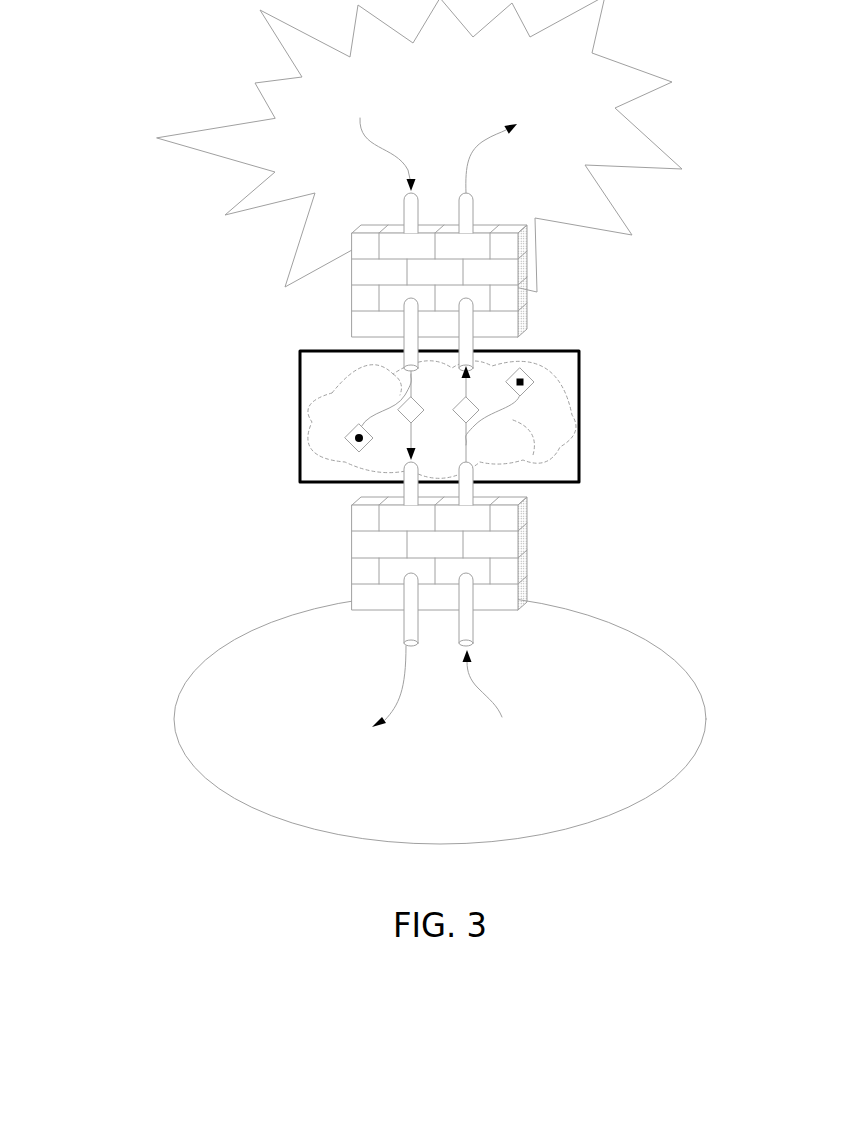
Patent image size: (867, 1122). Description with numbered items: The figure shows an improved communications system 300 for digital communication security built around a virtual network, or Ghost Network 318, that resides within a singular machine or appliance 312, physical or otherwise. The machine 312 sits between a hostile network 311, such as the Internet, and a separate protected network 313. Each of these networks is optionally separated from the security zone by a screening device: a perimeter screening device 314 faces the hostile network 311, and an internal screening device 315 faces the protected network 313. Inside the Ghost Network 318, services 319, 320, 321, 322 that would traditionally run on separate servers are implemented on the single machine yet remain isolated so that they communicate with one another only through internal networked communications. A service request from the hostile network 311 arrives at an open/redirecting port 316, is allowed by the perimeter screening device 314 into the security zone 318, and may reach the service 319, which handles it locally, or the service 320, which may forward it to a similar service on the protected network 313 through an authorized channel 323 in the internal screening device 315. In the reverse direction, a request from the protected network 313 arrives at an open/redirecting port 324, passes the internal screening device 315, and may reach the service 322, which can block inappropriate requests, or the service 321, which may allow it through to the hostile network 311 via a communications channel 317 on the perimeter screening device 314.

The communications system 300 is at (112, 53).
The hostile network 311 is at (683, 169).
The singular machine or appliance 312 is at (580, 414).
The protected network 313 is at (705, 714).
The perimeter screening device 314 is at (352, 283).
The internal screening device 315 is at (352, 553).
The open/redirecting port 316 is at (404, 206).
The communications channel 317 is at (473, 207).
The virtual network (Ghost Network) 318 is at (524, 458).
The service 319 is at (356, 426).
The service 320 is at (412, 428).
The service 321 is at (466, 396).
The service 322 is at (519, 395).
The authorized channel 323 is at (404, 632).
The open/redirecting port 324 is at (473, 632).